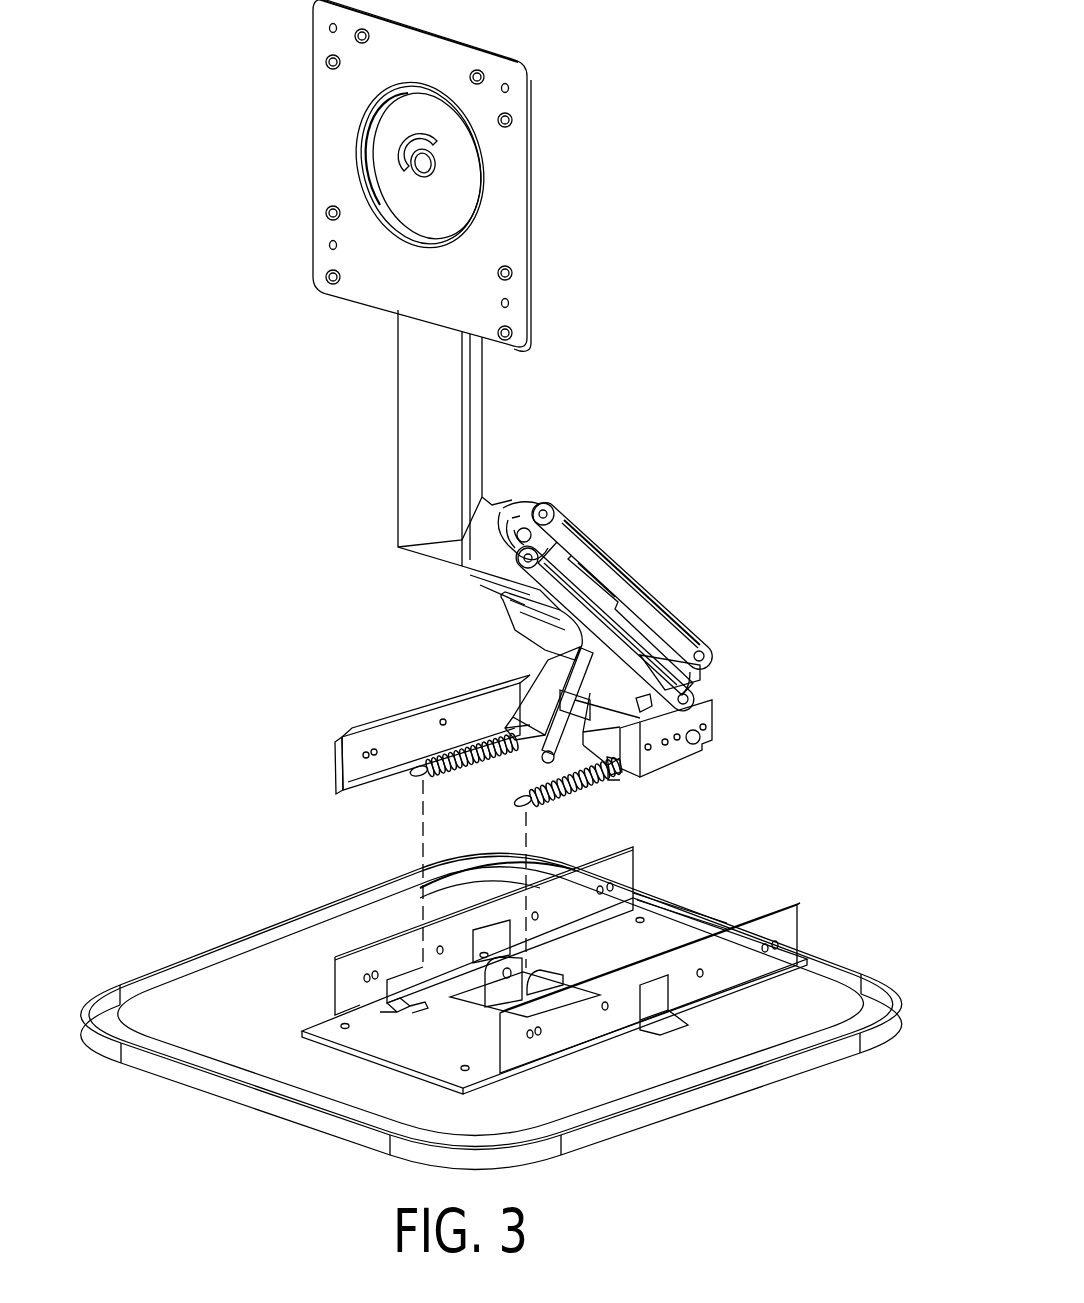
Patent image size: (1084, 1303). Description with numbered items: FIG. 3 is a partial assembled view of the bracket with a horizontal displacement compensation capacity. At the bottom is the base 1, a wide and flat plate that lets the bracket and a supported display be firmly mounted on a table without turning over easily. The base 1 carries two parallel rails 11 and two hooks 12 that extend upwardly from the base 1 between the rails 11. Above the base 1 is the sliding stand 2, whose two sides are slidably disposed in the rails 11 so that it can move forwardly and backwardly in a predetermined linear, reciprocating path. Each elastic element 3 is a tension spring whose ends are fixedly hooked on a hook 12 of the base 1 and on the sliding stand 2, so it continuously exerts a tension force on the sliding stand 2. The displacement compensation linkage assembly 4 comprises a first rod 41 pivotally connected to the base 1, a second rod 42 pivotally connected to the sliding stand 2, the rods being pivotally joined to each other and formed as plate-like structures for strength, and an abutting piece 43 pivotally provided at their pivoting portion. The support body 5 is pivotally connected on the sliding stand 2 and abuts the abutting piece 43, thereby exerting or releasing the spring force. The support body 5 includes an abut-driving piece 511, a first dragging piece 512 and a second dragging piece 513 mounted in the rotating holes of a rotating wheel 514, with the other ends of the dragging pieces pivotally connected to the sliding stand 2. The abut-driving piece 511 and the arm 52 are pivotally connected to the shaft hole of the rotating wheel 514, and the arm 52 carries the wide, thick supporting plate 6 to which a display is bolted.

The base 1 is at (283, 893).
The rails 11 is at (340, 752).
The hooks 12 is at (385, 1010).
The sliding stand 2 is at (732, 743).
The elastic element 3 is at (592, 808).
The displacement compensation linkage assembly 4 is at (548, 672).
The first rod 41 is at (527, 692).
The second rod 42 is at (645, 705).
The abutting piece 43 is at (560, 642).
The support body 5 is at (637, 595).
The abut-driving piece 511 is at (500, 610).
The first dragging piece 512 is at (592, 600).
The second dragging piece 513 is at (655, 622).
The rotating wheel 514 is at (535, 510).
The arm 52 is at (478, 415).
The supporting plate 6 is at (294, 139).